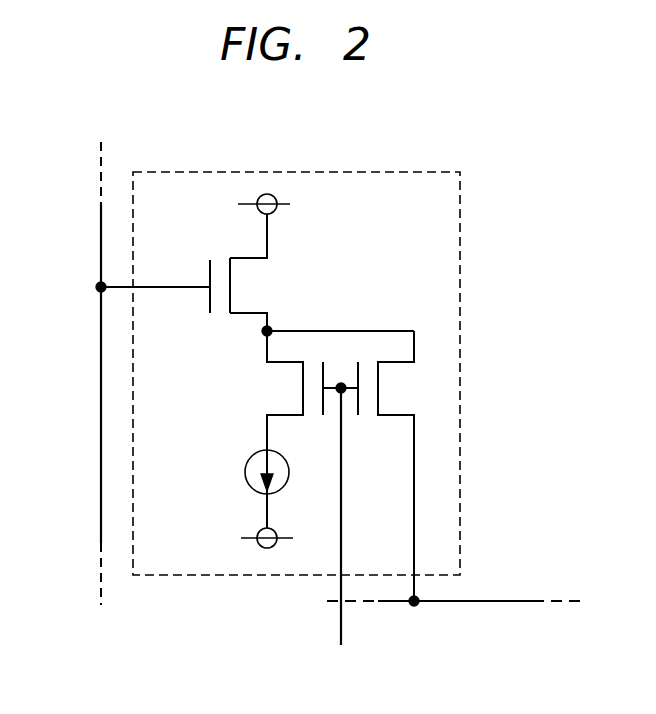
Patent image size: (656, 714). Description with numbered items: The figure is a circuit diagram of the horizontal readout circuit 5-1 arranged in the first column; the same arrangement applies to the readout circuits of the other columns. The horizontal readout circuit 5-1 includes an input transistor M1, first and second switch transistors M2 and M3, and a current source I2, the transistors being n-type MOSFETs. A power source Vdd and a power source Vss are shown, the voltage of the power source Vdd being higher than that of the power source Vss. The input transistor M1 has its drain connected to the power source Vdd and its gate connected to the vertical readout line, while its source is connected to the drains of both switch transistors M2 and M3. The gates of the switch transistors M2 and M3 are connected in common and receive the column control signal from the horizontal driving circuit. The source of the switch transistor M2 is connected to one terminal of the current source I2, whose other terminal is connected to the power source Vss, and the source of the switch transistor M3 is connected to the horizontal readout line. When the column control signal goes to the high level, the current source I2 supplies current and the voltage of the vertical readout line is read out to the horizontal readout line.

The horizontal readout circuit 5-1 is at (298, 172).
The input transistor M1 is at (186, 272).
The switch transistor M2 is at (300, 390).
The switch transistor M3 is at (382, 466).
The current source I2 is at (244, 472).
The power source Vdd is at (242, 225).
The power source Vss is at (245, 540).